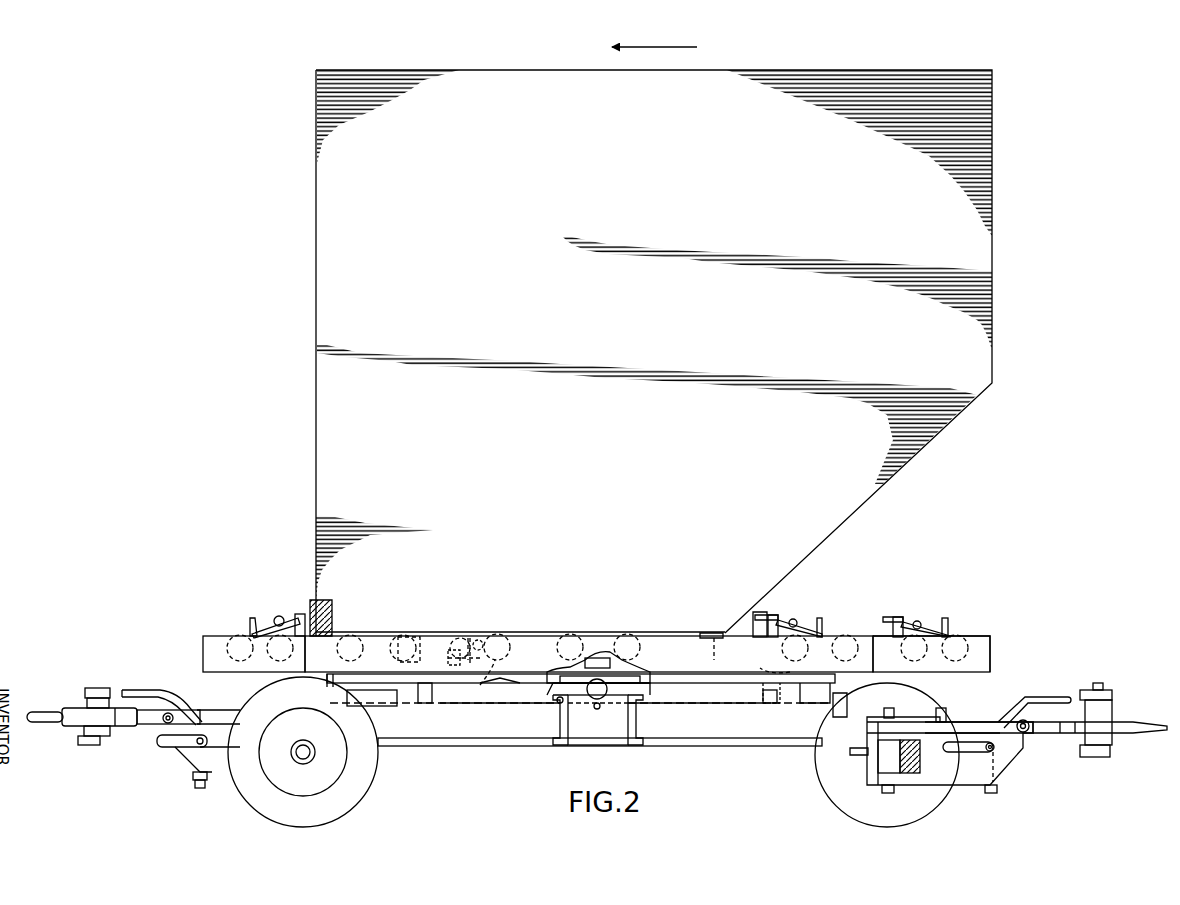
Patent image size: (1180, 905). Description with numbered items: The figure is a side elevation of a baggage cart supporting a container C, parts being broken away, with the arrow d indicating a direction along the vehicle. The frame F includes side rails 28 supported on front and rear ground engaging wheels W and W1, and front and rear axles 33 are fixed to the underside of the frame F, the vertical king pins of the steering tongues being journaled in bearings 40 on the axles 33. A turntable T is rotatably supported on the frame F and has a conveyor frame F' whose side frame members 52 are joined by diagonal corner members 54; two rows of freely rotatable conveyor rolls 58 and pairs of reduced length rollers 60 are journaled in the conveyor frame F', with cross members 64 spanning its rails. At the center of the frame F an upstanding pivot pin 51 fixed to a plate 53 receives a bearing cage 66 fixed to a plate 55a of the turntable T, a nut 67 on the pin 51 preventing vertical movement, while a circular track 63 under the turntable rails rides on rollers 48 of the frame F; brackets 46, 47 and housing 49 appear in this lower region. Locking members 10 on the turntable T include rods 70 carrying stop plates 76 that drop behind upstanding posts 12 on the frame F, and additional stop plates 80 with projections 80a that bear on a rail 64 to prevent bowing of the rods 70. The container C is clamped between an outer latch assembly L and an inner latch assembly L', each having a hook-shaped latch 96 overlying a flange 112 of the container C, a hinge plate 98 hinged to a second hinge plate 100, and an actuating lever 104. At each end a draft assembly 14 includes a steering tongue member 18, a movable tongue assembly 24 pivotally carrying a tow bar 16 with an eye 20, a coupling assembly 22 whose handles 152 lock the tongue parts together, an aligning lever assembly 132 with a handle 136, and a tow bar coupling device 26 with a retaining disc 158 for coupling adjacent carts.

The container C is at (302, 276).
The direction of travel d is at (655, 47).
The frame F is at (589, 728).
The conveyor frame F' is at (198, 654).
The locking member 10 is at (395, 627).
The upstanding post 12 is at (420, 703).
The draft assembly 14 is at (1040, 650).
The tow bar 16 is at (1058, 742).
The steering tongue member 18 is at (912, 708).
The eye 20 is at (1147, 722).
The coupling assembly 22 is at (1008, 774).
The movable tongue assembly 24 is at (968, 782).
The tow bar coupling device 26 is at (1108, 690).
The side rail 28 is at (703, 746).
The axle 33 is at (912, 774).
The bearing 40 is at (882, 762).
The bracket 46 is at (805, 708).
The flange 47 is at (634, 718).
The roller 48 is at (838, 708).
The kingpin housing 49 is at (595, 735).
The pivot pin 51 is at (612, 655).
The side frame member 52 is at (663, 645).
The plate 53 is at (558, 703).
The diagonal corner member 54 is at (990, 655).
The plate 55a is at (625, 699).
The conveyor roll 58 is at (632, 652).
The reduced length roller 60 is at (241, 661).
The circular track 63 is at (495, 676).
The cross member 64 is at (470, 640).
The bearing cage 66 is at (568, 700).
The nut 67 is at (595, 650).
The rod 70 is at (448, 656).
The stop plate 76 is at (480, 685).
The additional stop plate 80 is at (600, 706).
The projection 80a is at (479, 640).
The hook-shaped latch 96 is at (312, 612).
The hinge plate 98 is at (290, 620).
The hinge plate 100 is at (275, 628).
The actuating lever 104 is at (248, 628).
The flange 112 is at (544, 639).
The aligning lever assembly 132 is at (972, 720).
The handle 136 is at (1040, 697).
The handle 152 is at (975, 752).
The retaining disc 158 is at (1095, 688).
The latch assembly L is at (592, 587).
The inner latch assembly L' is at (619, 597).
The turntable T is at (945, 625).
The front wheel W is at (942, 805).
The rear wheel W1 is at (350, 800).